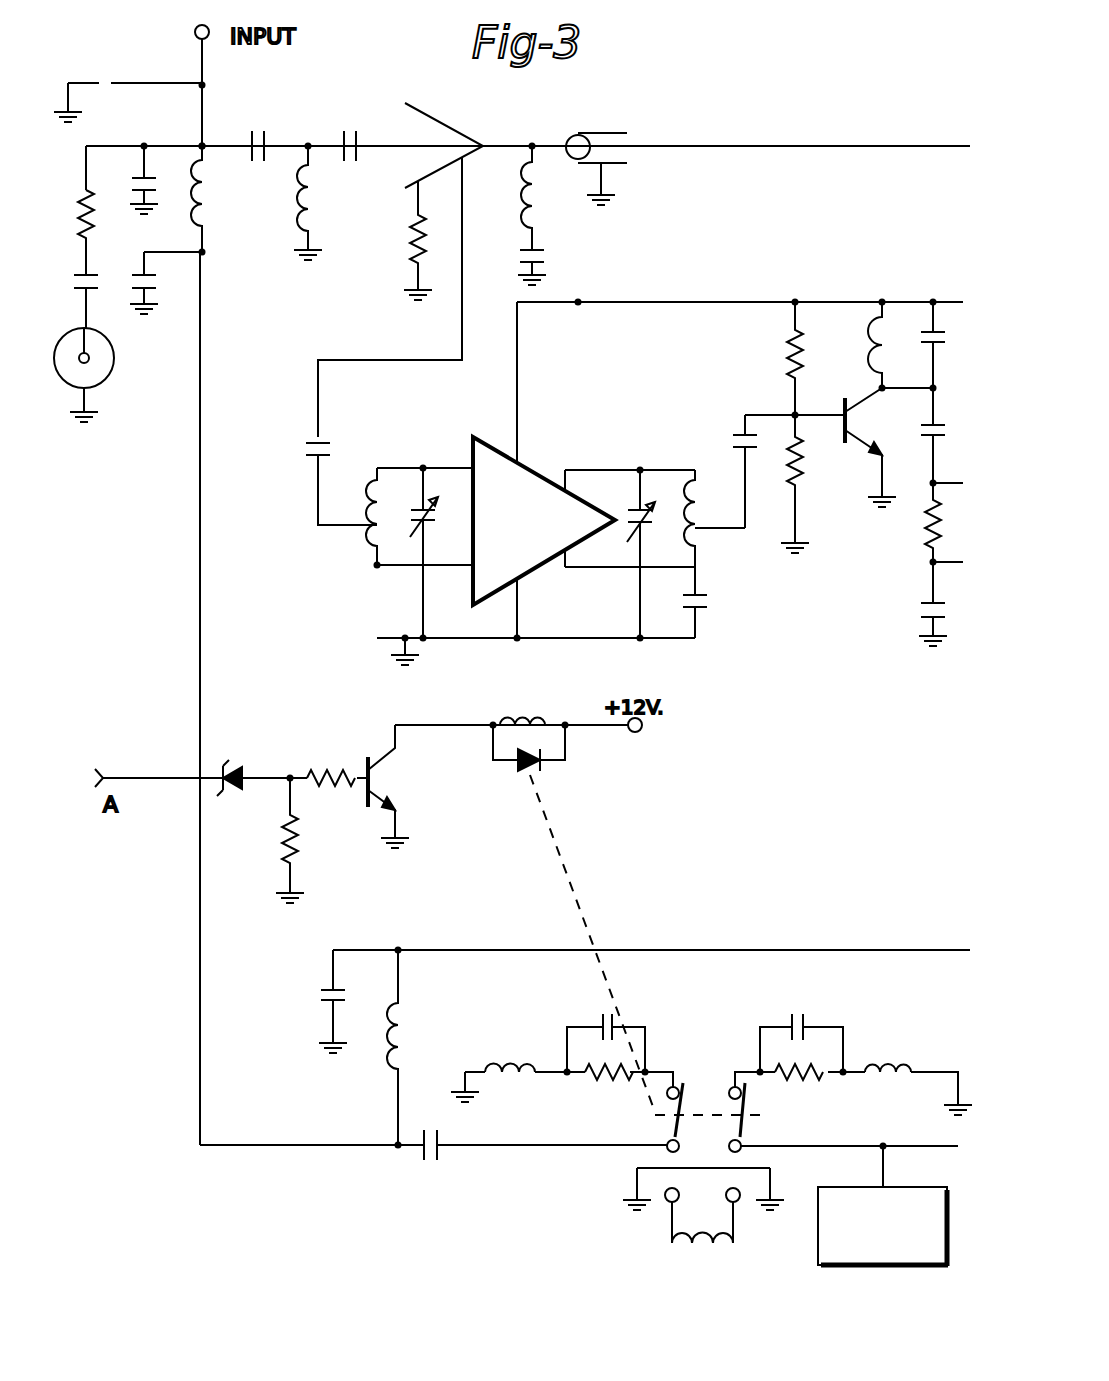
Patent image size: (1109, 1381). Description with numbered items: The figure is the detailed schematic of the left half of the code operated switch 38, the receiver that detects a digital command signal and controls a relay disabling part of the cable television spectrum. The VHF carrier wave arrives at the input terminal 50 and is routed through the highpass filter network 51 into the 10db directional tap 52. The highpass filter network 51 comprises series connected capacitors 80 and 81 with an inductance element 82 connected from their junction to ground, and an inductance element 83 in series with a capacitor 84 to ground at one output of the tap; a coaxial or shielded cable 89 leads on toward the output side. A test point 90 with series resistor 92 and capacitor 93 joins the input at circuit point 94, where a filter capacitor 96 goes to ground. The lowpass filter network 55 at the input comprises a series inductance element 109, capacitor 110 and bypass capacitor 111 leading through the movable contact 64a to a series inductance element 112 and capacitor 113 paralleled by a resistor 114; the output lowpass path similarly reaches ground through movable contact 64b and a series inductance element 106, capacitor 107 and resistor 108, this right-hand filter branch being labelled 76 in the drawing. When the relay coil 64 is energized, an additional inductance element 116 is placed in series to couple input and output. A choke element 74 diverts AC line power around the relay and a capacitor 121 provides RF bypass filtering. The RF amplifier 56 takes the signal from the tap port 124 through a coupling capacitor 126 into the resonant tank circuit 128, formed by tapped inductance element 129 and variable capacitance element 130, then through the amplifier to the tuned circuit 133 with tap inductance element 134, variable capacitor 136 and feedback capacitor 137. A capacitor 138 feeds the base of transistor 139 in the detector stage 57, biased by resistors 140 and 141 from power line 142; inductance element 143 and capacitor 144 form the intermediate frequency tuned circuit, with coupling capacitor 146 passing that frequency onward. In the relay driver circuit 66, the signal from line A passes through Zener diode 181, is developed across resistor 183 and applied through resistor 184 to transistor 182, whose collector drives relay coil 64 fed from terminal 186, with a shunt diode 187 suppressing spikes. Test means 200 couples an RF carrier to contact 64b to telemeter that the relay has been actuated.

The code operated switch 38 is at (812, 128).
The input terminal 50 is at (195, 33).
The highpass filter network 51 is at (328, 120).
The 10db directional tap 52 is at (462, 120).
The lowpass filter network 55 is at (225, 236).
The RF amplifier 56 is at (570, 458).
The detector stage 57 is at (895, 300).
The relay coil 64 is at (526, 720).
The movable contact 64a is at (670, 1122).
The movable contact 64b is at (746, 1126).
The relay driver circuit 66 is at (446, 836).
The choke element 74 is at (406, 1032).
The test circuit 76 is at (710, 1020).
The capacitor 80 is at (270, 130).
The capacitor 81 is at (360, 136).
The inductance element 82 is at (318, 194).
The inductance element 83 is at (544, 208).
The capacitor 84 is at (548, 260).
The coaxial or shielded cable 89 is at (627, 163).
The test point 90 is at (114, 358).
The resistor 92 is at (80, 206).
The capacitor 93 is at (78, 273).
The circuit point 94 is at (200, 143).
The filter capacitor 96 is at (134, 178).
The inductance element 106 is at (888, 1068).
The capacitor 107 is at (808, 1026).
The resistor 108 is at (788, 1068).
The inductance element 109 is at (208, 184).
The capacitor 110 is at (140, 274).
The bypass capacitor 111 is at (424, 1160).
The inductance element 112 is at (494, 1070).
The capacitor 113 is at (604, 1024).
The resistor 114 is at (592, 1082).
The inductance element 116 is at (684, 1254).
The capacitor 121 is at (318, 998).
The tap port 124 is at (464, 170).
The coupling capacitor 126 is at (324, 437).
The resonant tank circuit 128 is at (396, 455).
The tapped inductance element 129 is at (366, 494).
The variable capacitance element 130 is at (428, 524).
The tuned circuit 133 is at (650, 468).
The tap inductance element 134 is at (700, 543).
The variable capacitor 136 is at (634, 506).
The feedback capacitor 137 is at (706, 602).
The capacitor 138 is at (742, 426).
The transistor 139 is at (852, 402).
The resistor 140 is at (785, 360).
The resistor 141 is at (801, 480).
The power line 142 is at (690, 302).
The inductance element 143 is at (872, 348).
The capacitor 144 is at (926, 344).
The coupling capacitor 146 is at (925, 435).
The Zener diode 181 is at (236, 770).
The transistor 182 is at (384, 794).
The signal developing resistor 183 is at (284, 844).
The resistor 184 is at (327, 766).
The terminal 186 is at (638, 732).
The shunt diode 187 is at (528, 770).
The test means 200 is at (834, 1266).